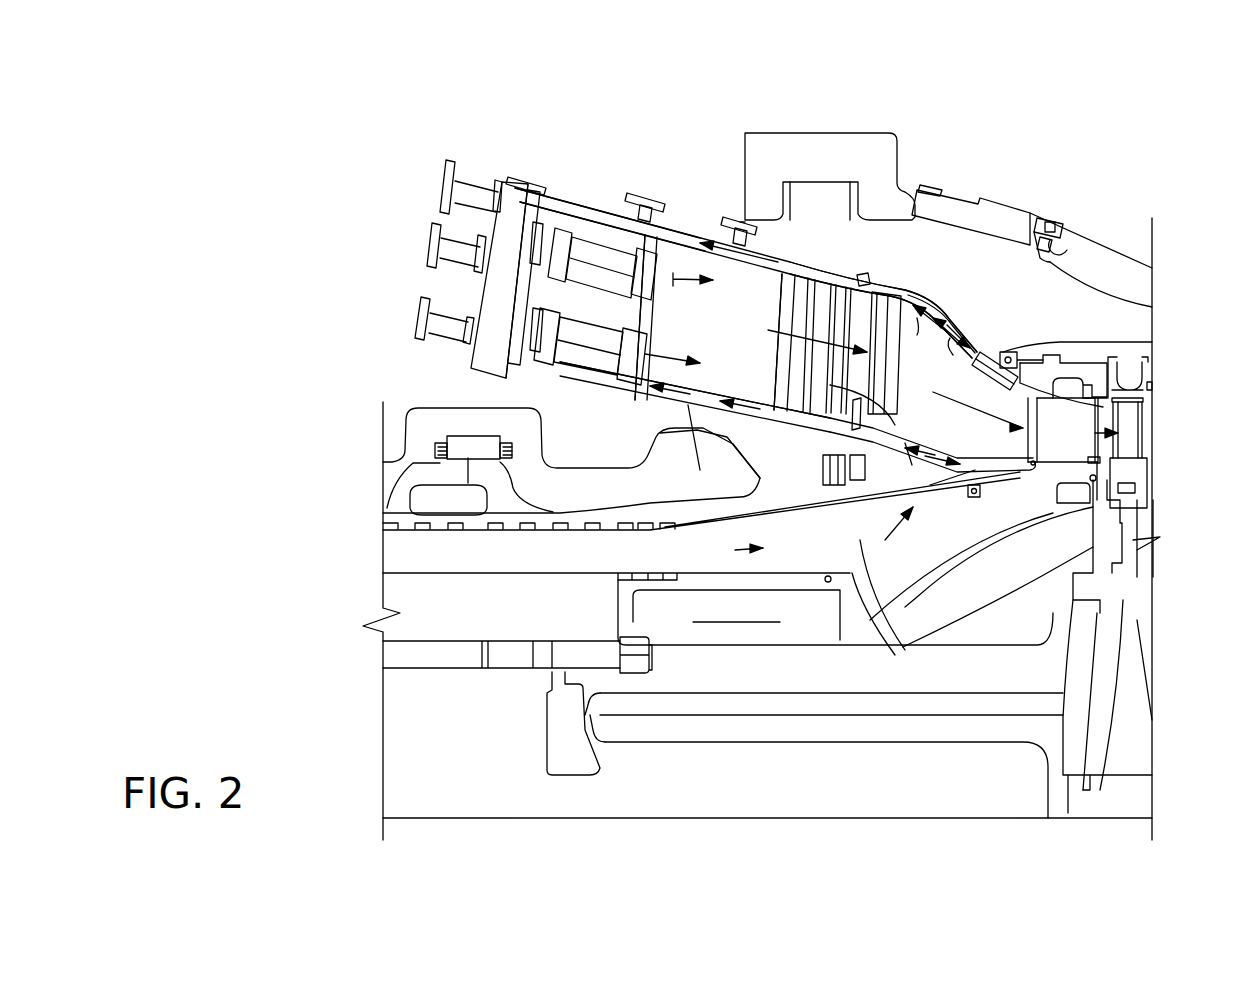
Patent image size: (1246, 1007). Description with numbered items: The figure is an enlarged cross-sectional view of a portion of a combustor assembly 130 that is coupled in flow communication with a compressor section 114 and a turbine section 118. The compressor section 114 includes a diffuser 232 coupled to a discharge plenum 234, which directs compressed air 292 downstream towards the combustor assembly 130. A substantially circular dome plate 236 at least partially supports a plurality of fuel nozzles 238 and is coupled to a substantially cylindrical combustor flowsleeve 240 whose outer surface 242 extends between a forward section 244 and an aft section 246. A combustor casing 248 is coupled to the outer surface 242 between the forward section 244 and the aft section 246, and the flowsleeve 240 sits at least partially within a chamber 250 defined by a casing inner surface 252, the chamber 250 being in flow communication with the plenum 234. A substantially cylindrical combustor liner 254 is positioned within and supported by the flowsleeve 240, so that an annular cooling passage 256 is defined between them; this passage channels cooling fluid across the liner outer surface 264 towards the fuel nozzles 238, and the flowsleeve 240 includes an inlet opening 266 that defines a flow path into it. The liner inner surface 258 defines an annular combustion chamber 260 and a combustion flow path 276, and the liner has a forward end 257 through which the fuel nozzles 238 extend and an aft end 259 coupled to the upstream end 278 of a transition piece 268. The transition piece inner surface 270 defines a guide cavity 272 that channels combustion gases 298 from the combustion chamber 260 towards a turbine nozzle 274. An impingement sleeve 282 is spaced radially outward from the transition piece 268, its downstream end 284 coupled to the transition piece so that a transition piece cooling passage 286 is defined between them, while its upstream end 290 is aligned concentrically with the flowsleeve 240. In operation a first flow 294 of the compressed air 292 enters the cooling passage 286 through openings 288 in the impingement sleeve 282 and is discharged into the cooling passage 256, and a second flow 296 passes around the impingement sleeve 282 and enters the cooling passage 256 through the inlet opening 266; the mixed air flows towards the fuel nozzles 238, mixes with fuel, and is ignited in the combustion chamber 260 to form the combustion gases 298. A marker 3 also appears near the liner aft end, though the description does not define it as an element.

The section line 3 is at (1063, 366).
The compressor section 114 is at (381, 595).
The turbine section 118 is at (1130, 420).
The combustor assembly 130 is at (440, 125).
The diffuser 232 is at (883, 560).
The discharge plenum 234 is at (1000, 530).
The dome plate 236 is at (505, 264).
The fuel nozzles 238 is at (600, 195).
The combustor flowsleeve 240 is at (710, 305).
The outer surface 242 is at (793, 257).
The forward section 244 is at (677, 205).
The aft section 246 is at (810, 251).
The combustor casing 248 is at (845, 132).
The chamber 250 is at (1040, 216).
The casing inner surface 252 is at (953, 207).
The combustor liner 254 is at (700, 321).
The annular cooling passage 256 is at (790, 270).
The forward end 257 is at (573, 242).
The inner surface 258 is at (680, 387).
The aft end 259 is at (1152, 349).
The combustion chamber 260 is at (733, 349).
The outer surface 264 is at (780, 270).
The inlet opening 266 is at (863, 277).
The transition piece 268 is at (990, 373).
The inner surface 270 is at (910, 460).
The guide cavity 272 is at (985, 427).
The turbine nozzle 274 is at (1073, 430).
The combustion flow path 276 is at (768, 330).
The upstream end 278 is at (930, 273).
The impingement sleeve 282 is at (923, 292).
The downstream end 284 is at (1057, 325).
The transition piece cooling passage 286 is at (950, 338).
The openings 288 is at (980, 352).
The upstream end 290 is at (900, 277).
The compressed air 292 is at (735, 550).
The first flow 294 is at (930, 298).
The second flow 296 is at (827, 262).
The combustion gases 298 is at (676, 319).